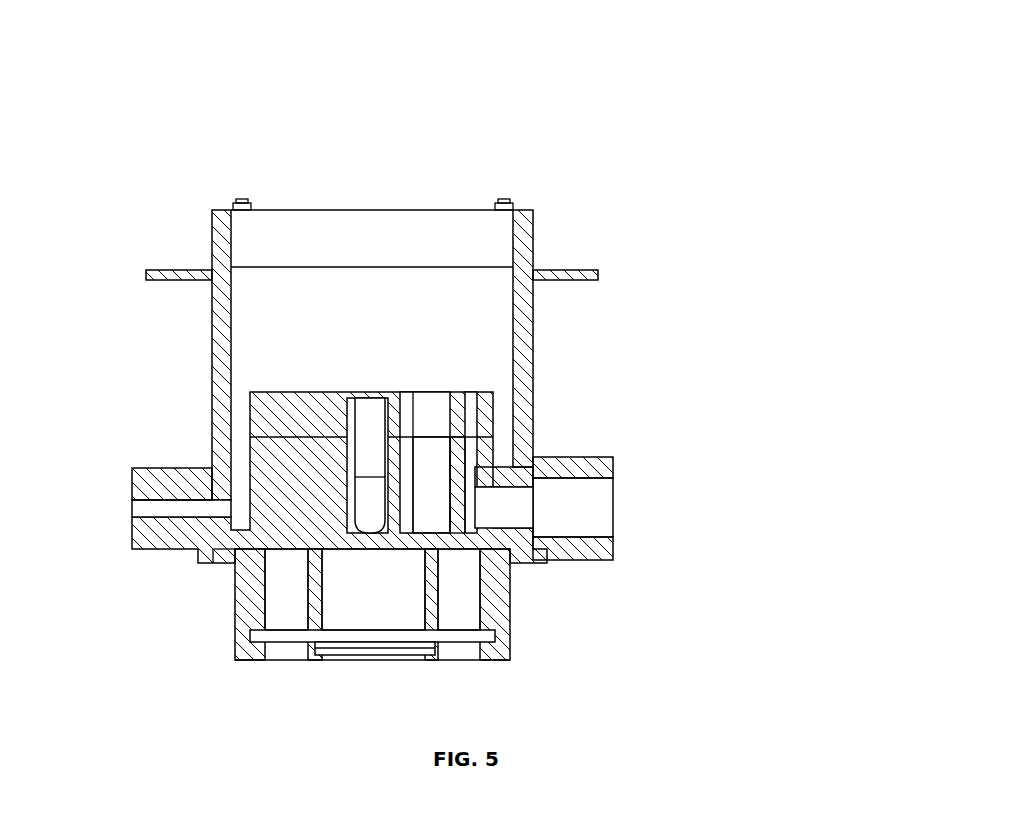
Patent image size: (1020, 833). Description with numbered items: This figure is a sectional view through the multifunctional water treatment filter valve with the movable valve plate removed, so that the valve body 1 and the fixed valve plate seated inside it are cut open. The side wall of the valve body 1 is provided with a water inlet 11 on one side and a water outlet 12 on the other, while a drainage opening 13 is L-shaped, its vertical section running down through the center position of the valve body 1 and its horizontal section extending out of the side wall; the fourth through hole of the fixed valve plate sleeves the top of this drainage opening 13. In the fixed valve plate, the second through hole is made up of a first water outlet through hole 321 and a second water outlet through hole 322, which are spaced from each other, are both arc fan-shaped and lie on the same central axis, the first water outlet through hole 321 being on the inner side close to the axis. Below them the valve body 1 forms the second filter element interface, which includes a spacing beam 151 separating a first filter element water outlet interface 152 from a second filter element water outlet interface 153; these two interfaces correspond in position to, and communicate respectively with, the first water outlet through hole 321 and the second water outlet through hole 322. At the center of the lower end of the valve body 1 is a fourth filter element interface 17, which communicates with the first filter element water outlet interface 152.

The valve body 1 is at (372, 235).
The water inlet 11 is at (193, 497).
The water outlet 12 is at (592, 462).
The drainage opening 13 is at (372, 519).
The fourth filter element interface 17 is at (352, 570).
The spacing beam 151 is at (463, 478).
The first filter element water outlet interface 152 is at (442, 498).
The second filter element water outlet interface 153 is at (530, 487).
The first water outlet through hole 321 is at (433, 408).
The second water outlet through hole 322 is at (473, 412).